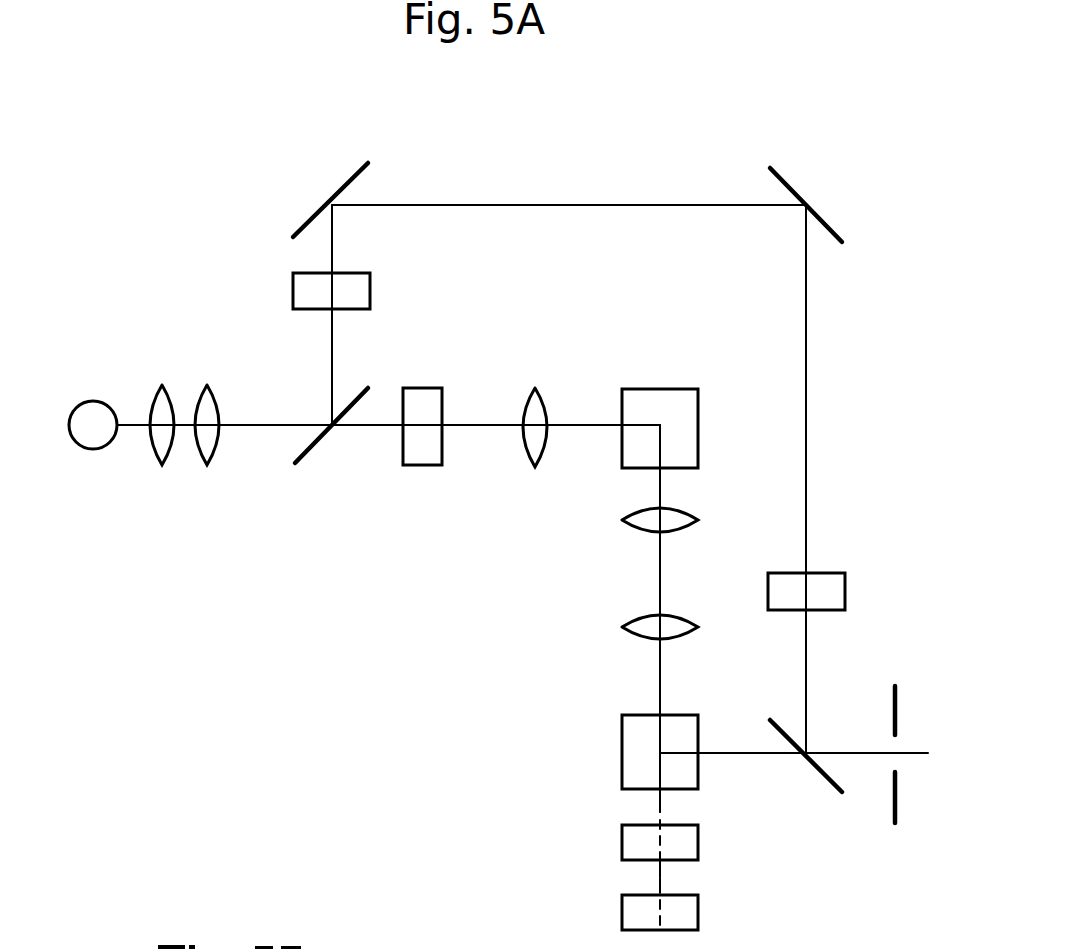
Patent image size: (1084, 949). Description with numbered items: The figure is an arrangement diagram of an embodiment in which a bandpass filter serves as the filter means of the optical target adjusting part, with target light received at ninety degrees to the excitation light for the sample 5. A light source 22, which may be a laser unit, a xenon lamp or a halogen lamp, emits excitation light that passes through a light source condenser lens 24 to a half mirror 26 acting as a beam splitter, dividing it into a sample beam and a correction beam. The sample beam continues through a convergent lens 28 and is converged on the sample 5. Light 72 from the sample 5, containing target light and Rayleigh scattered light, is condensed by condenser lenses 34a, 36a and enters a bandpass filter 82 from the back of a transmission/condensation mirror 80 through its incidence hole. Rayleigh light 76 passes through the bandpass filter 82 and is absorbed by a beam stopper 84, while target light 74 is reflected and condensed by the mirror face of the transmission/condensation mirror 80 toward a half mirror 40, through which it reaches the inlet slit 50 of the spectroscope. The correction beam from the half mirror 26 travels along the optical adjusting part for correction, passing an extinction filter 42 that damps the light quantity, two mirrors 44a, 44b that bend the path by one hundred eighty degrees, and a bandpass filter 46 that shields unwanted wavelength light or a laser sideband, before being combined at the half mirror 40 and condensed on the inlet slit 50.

The sample 5 is at (661, 389).
The light source 22 is at (93, 401).
The light source condenser lens 24 is at (184, 396).
The half mirror 26 is at (317, 448).
The convergent lens 28 is at (527, 455).
The condenser lens 34a is at (640, 531).
The condenser lens 36a is at (622, 628).
The half mirror 40 is at (822, 783).
The extinction filter 42 is at (293, 289).
The mirror 44a is at (347, 182).
The mirror 44b is at (788, 183).
The bandpass filter 46 is at (420, 466).
The inlet slit 50 is at (893, 800).
The light from sample 72 is at (660, 808).
The target light 74 is at (735, 753).
The Rayleigh light 76 is at (660, 870).
The transmission/condensation mirror 80 is at (622, 730).
The bandpass filter 82 is at (622, 847).
The beam stopper 84 is at (622, 913).